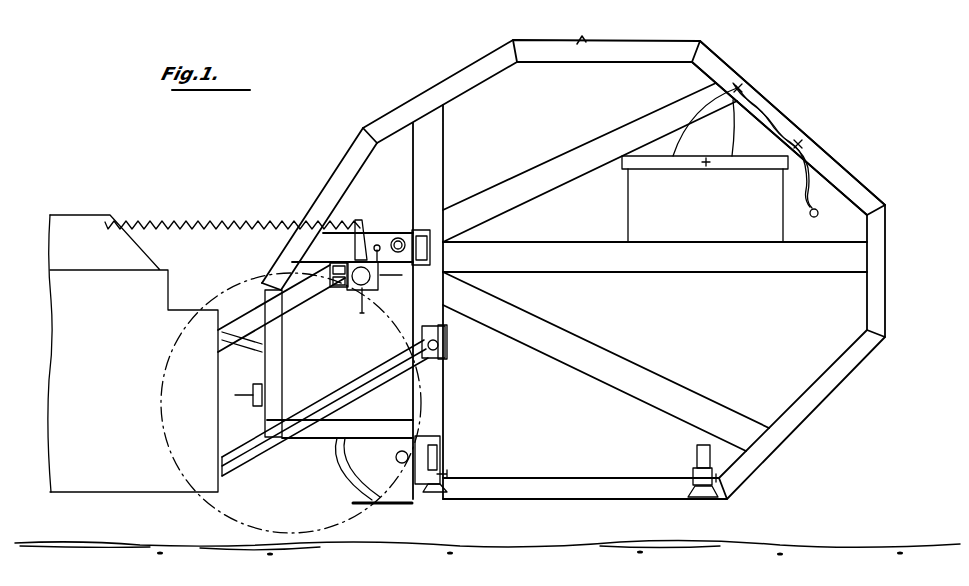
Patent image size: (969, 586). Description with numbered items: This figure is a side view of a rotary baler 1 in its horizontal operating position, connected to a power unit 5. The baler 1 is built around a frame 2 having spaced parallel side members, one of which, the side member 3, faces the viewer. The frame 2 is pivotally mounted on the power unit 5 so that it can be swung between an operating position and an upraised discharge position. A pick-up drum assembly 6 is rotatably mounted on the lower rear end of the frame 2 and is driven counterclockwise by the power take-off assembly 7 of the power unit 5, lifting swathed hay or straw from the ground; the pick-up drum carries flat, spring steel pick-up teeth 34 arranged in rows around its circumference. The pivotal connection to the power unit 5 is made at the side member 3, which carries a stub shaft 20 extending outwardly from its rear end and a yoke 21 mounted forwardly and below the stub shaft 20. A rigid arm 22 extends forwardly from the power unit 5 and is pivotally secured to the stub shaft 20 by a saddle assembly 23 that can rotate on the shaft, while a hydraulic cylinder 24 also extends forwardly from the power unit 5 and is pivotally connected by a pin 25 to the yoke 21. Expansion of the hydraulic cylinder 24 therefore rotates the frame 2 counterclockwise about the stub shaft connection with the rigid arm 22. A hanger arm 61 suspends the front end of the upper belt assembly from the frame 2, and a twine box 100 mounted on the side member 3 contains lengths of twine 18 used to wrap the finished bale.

The rotary baler 1 is at (376, 83).
The frame 2 is at (448, 76).
The side member 3 is at (690, 76).
The power unit 5 is at (126, 488).
The pick-up drum assembly 6 is at (342, 477).
The power take-off assembly 7 is at (252, 350).
The twine length 18 is at (783, 122).
The stub shaft 20 is at (370, 290).
The yoke 21 is at (447, 349).
The rigid arm 22 is at (272, 318).
The saddle assembly 23 is at (345, 244).
The hydraulic cylinder 24 is at (336, 390).
The pin 25 is at (447, 370).
The pick-up teeth 34 is at (418, 525).
The hanger arm 61 is at (580, 40).
The twine box 100 is at (634, 212).